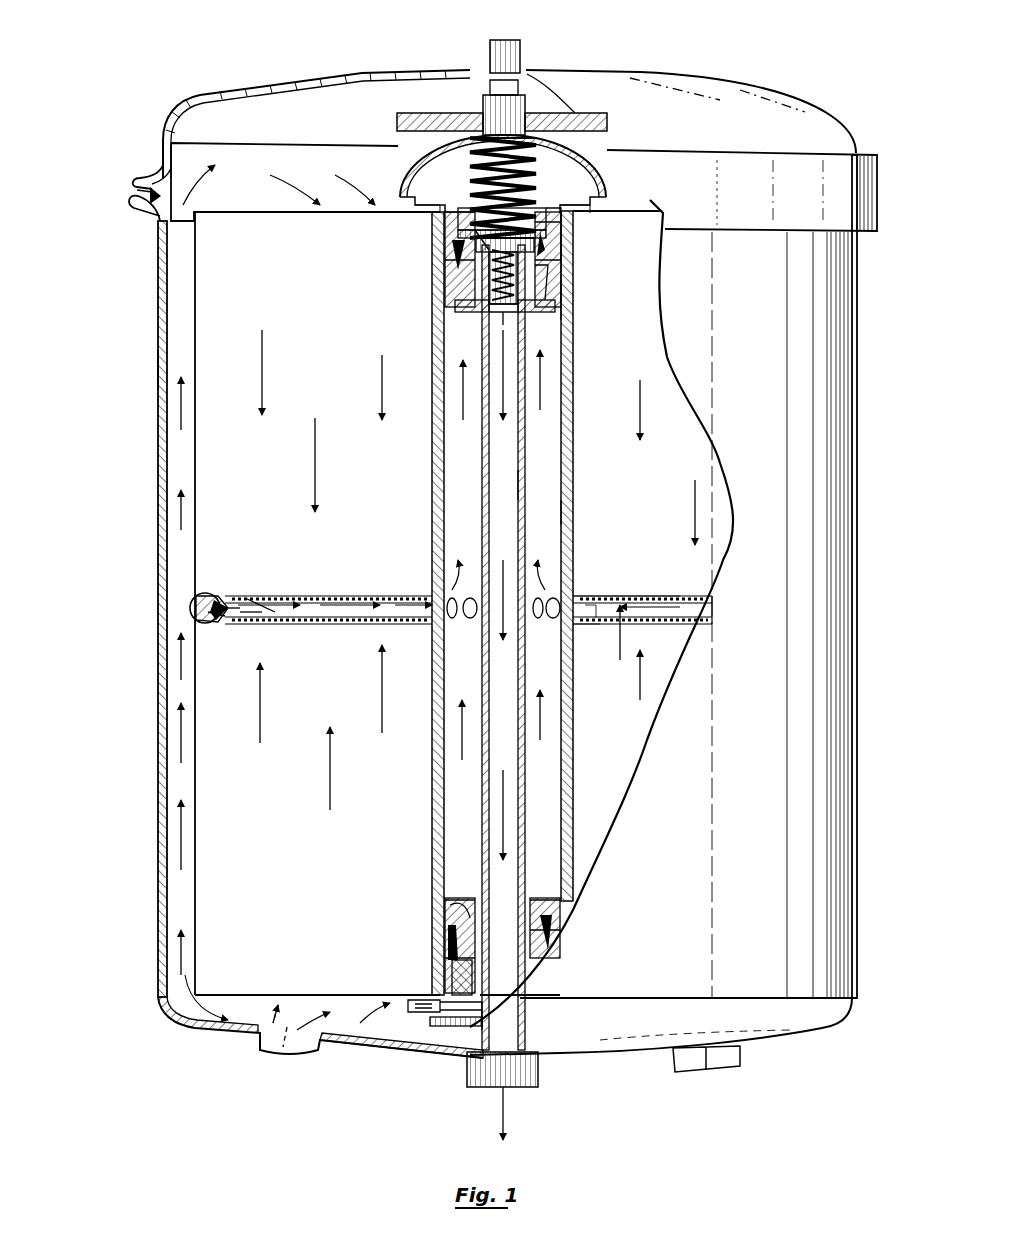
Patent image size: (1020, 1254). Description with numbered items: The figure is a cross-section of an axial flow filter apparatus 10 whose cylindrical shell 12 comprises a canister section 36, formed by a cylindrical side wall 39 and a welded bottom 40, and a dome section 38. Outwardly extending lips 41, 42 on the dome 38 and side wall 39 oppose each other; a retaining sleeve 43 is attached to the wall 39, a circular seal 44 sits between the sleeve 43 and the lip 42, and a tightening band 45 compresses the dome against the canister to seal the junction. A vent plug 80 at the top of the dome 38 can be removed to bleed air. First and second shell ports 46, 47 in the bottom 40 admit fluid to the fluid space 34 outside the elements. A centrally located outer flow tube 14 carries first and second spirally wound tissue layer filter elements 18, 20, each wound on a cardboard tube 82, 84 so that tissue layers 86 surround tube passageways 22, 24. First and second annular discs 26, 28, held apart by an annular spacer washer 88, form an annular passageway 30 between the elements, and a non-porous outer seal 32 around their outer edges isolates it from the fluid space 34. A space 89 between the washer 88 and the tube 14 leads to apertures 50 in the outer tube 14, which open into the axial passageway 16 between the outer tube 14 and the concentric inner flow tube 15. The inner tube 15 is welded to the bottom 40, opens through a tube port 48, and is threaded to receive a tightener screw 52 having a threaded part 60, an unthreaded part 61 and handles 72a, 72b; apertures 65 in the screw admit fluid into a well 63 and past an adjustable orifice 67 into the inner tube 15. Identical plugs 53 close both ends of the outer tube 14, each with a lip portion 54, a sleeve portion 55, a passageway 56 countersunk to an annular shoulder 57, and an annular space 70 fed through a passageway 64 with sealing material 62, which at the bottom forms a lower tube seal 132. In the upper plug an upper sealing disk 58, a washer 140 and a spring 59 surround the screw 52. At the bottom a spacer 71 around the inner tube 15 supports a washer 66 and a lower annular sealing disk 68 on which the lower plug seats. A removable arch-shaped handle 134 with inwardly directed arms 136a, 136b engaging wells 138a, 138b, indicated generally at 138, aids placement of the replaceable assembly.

The axial flow filter apparatus 10 is at (815, 87).
The cylindrical shell 12 is at (822, 470).
The outer flow tube 14 is at (576, 834).
The inner flow tube 15 is at (525, 543).
The axial passageway 16 is at (530, 457).
The first spirally wound tissue layer filter element 18 is at (236, 940).
The second spirally wound tissue layer filter element 20 is at (238, 474).
The tube passageway 22 is at (606, 799).
The tube passageway 24 is at (570, 490).
The first annular disc 26 is at (258, 628).
The second annular disc 28 is at (276, 592).
The annular passageway 30 is at (250, 599).
The outer seal 32 is at (186, 607).
The fluid space 34 is at (184, 325).
The canister section 36 is at (156, 370).
The dome section 38 is at (346, 60).
The cylindrical side wall 39 is at (158, 782).
The bottom 40 is at (224, 1038).
The lip 41 is at (150, 177).
The lip 42 is at (150, 200).
The retaining sleeve 43 is at (192, 170).
The circular seal 44 is at (146, 191).
The tightening band 45 is at (852, 180).
The first shell port 46 is at (292, 1062).
The second shell port 47 is at (720, 1070).
The tube port 48 is at (524, 1082).
The apertures 50 is at (556, 592).
The tightener screw 52 is at (455, 260).
The plugs 53 is at (562, 324).
The lip portion 54 is at (556, 212).
The sleeve portion 55 is at (448, 224).
The passageway 56 is at (490, 270).
The annular shoulder 57 is at (546, 228).
The upper sealing disk 58 is at (450, 236).
The spring 59 is at (560, 168).
The threaded part 60 is at (492, 294).
The unthreaded part 61 is at (516, 112).
The sealing material 62 is at (445, 264).
The well 63 is at (490, 314).
The passageway 64 is at (592, 228).
The apertures 65 is at (542, 239).
The washer 66 is at (452, 1042).
The adjustable orifice 67 is at (522, 320).
The lower annular sealing disk 68 is at (486, 1028).
The annular space 70 is at (556, 299).
The spacer 71 is at (450, 1034).
The handle 72a is at (436, 113).
The handle 72b is at (575, 113).
The vent plug 80 is at (509, 42).
The cardboard tube 82 is at (574, 742).
The cardboard tube 84 is at (573, 514).
The spirally wound tissue layers 86 is at (678, 632).
The annular spacer washer 88 is at (578, 616).
The space 89 is at (574, 619).
The lower tube seal 132 is at (450, 912).
The removable handle 134 is at (422, 152).
The arm 136a is at (418, 202).
The arm 136b is at (610, 200).
The spring retainer 138 is at (578, 270).
The well 138a is at (438, 208).
The well 138b is at (603, 216).
The washer 140 is at (530, 214).